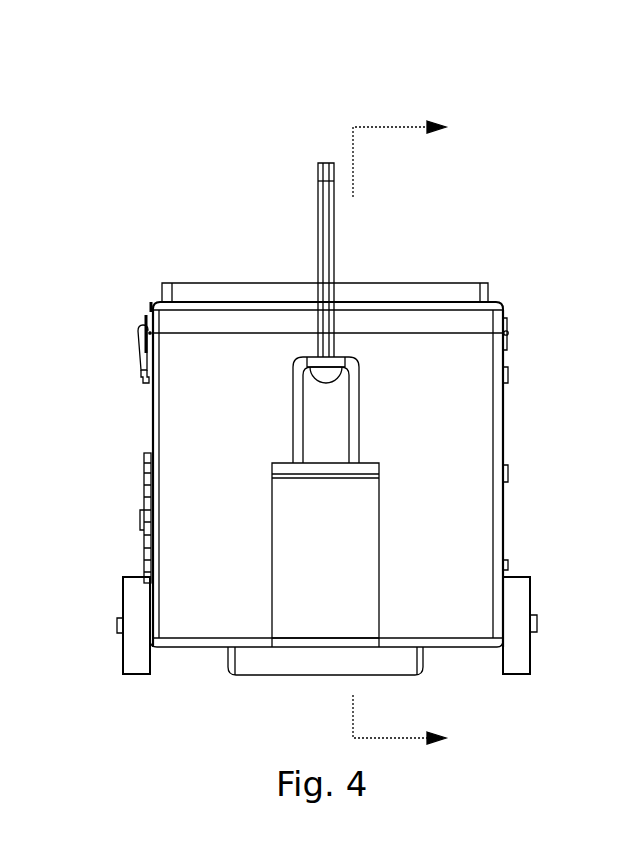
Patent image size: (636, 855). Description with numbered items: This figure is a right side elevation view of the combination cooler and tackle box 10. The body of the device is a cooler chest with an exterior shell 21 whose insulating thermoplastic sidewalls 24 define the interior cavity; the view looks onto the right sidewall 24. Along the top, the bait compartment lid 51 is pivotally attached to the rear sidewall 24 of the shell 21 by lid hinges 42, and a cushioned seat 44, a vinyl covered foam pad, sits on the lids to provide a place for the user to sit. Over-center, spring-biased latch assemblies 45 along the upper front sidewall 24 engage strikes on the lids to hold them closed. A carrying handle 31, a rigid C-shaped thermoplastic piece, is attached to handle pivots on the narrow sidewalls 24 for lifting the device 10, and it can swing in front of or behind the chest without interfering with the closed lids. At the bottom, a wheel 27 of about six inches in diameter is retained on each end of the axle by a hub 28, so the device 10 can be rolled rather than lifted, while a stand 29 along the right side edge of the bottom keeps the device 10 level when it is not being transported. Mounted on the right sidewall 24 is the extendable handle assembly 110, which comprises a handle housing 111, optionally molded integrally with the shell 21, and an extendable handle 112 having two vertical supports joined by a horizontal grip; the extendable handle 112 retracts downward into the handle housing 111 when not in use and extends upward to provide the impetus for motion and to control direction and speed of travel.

The combination cooler and tackle box 10 is at (138, 168).
The exterior shell 21 is at (148, 424).
The sidewall 24 is at (475, 368).
The wheel 27 is at (123, 660).
The hub 28 is at (117, 621).
The stand 29 is at (255, 680).
The carrying handle 31 is at (318, 173).
The lid hinge 42 is at (509, 333).
The cushioned seat 44 is at (450, 290).
The latch assembly 45 is at (141, 338).
The bait compartment lid 51 is at (154, 305).
The extendable handle assembly 110 is at (381, 542).
The handle housing 111 is at (380, 620).
The extendable handle 112 is at (358, 428).